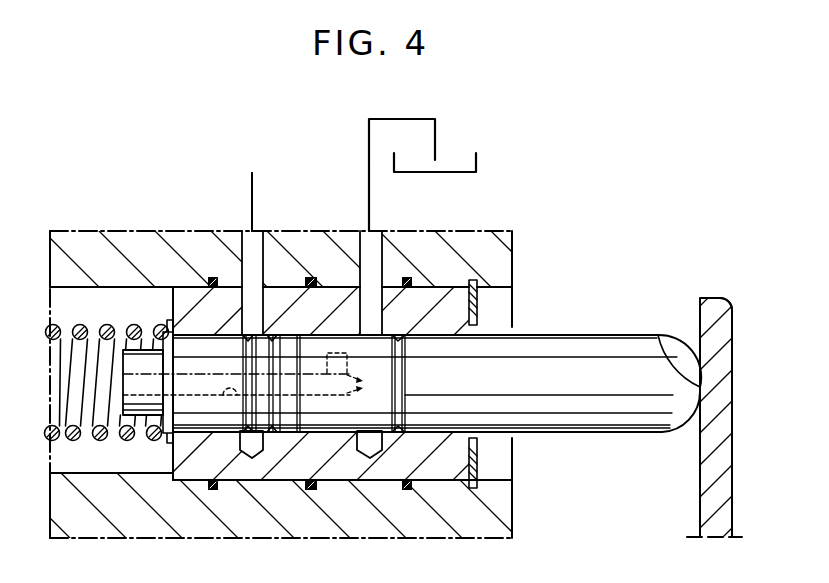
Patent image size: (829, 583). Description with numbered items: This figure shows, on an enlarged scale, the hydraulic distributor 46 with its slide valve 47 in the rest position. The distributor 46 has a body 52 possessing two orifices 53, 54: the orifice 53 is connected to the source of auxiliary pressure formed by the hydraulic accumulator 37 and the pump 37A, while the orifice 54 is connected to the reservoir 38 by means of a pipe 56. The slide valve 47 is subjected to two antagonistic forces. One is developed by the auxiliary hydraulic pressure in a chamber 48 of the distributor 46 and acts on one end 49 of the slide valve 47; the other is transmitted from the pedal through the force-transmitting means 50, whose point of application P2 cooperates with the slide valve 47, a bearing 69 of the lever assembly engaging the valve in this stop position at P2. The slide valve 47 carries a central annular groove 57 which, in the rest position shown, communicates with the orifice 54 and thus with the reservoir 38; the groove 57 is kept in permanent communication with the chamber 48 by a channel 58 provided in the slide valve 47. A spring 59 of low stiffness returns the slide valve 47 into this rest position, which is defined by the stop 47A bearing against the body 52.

The hydraulic accumulator 37 is at (252, 186).
The pump 37A is at (211, 202).
The reservoir 38 is at (476, 161).
The hydraulic distributor 46 is at (170, 486).
The slide valve 47 is at (557, 348).
The stop 47A is at (167, 288).
The chamber 48 is at (72, 300).
The end of the slide valve 49 is at (122, 408).
The means for transmitting force 50 is at (737, 366).
The body 52 is at (311, 228).
The orifice 53 is at (256, 246).
The orifice 54 is at (362, 256).
The pipe 56 is at (369, 135).
The central annular groove 57 is at (338, 424).
The channel 58 is at (230, 395).
The spring 59 is at (108, 323).
The bearing 69 is at (721, 312).
The point for the application of force P2 is at (658, 335).